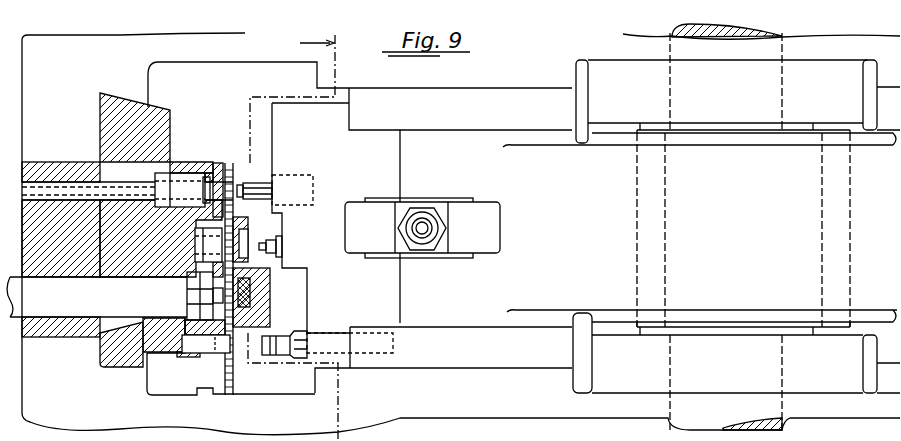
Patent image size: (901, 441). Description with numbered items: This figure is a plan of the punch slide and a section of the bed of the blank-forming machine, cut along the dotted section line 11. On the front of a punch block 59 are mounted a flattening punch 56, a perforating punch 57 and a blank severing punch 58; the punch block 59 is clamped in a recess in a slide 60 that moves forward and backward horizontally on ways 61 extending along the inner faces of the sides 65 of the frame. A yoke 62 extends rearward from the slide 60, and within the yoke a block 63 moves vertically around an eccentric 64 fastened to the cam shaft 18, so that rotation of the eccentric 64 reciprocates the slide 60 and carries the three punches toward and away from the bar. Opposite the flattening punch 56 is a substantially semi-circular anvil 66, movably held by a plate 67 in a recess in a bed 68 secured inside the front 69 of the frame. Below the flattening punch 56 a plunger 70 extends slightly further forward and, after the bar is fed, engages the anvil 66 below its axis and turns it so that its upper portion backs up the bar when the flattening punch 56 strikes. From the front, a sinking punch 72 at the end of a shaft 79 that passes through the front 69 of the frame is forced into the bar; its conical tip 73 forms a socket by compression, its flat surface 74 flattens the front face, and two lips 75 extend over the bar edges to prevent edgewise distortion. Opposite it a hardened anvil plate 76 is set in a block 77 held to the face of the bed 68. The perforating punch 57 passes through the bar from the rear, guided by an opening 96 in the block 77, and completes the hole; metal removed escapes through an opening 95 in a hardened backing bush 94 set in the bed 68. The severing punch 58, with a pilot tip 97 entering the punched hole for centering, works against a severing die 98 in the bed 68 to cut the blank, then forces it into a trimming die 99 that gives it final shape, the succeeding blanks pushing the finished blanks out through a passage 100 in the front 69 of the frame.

The section line 11— 11 is at (293, 228).
The cam shaft 18 is at (672, 370).
The flattening punch 56 is at (274, 358).
The perforating punch 57 is at (292, 254).
The blank severing punch 58 is at (247, 187).
The punch block 59 is at (386, 228).
The slide 60 is at (607, 240).
The ways 61 is at (572, 105).
The yoke 62 is at (727, 231).
The block 63 is at (857, 228).
The eccentric 64 is at (820, 278).
The sides of the frame 65 is at (309, 227).
The anvil 66 is at (207, 350).
The plate 67 is at (182, 358).
The bed 68 is at (143, 360).
The front of the frame 69 is at (461, 229).
The plunger 70 is at (264, 358).
The sinking punch 72 is at (187, 298).
The conical tip 73 is at (200, 306).
The flat surface 74 is at (187, 283).
The lips 75 is at (271, 278).
The hardened anvil plate 76 is at (271, 297).
The block 77 is at (271, 316).
The shaft 79 is at (97, 297).
The hardened backing bush 94 is at (203, 237).
The opening 95 is at (195, 248).
The opening 96 is at (240, 243).
The pilot tip 97 is at (238, 175).
The severing die 98 is at (216, 163).
The trimming die 99 is at (183, 163).
The passage 100 is at (58, 190).